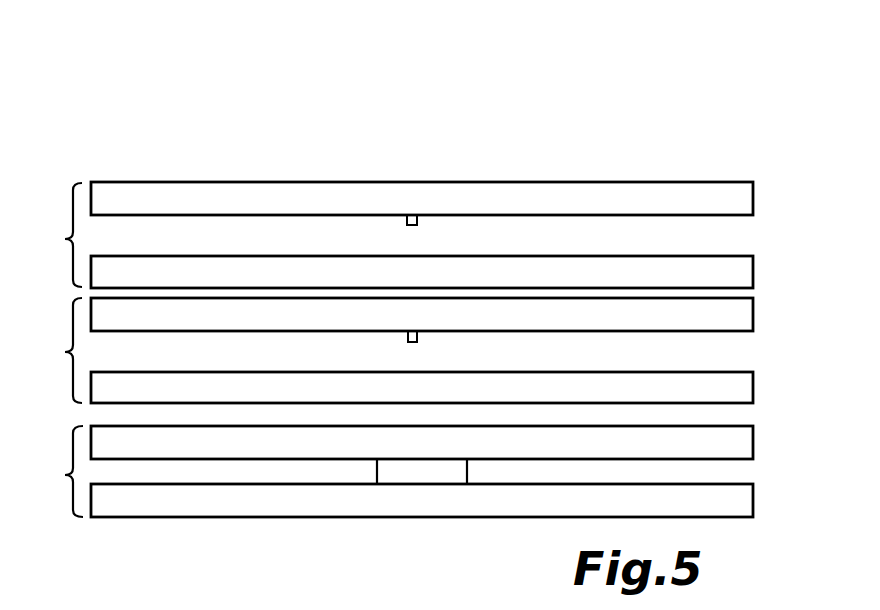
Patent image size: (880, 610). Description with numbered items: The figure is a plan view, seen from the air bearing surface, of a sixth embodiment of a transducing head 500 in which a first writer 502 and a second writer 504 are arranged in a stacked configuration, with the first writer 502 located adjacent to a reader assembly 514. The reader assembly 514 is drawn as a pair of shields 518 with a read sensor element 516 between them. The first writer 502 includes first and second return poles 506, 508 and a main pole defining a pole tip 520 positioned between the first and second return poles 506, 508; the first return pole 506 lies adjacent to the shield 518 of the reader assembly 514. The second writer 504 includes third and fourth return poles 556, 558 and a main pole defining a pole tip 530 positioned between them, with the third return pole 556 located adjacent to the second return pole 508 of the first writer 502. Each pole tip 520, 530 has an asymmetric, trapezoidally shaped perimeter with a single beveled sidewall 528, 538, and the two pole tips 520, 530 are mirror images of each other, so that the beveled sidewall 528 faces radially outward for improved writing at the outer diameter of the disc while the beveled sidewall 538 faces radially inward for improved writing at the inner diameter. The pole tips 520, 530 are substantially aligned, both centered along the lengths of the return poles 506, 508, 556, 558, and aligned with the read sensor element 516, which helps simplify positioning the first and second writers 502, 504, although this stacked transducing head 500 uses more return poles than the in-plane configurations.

The transducing head 500 is at (523, 143).
The first writer 502 is at (426, 350).
The second writer 504 is at (427, 235).
The first return pole 506 is at (730, 390).
The second return pole 508 is at (735, 315).
The reader assembly 514 is at (426, 489).
The read sensor element 516 is at (428, 472).
The shield 518 is at (740, 450).
The pole tip 520 is at (422, 337).
The beveled sidewall 528 is at (407, 336).
The pole tip 530 is at (406, 223).
The beveled sidewall 538 is at (418, 225).
The third return pole 556 is at (736, 275).
The fourth return pole 558 is at (740, 203).